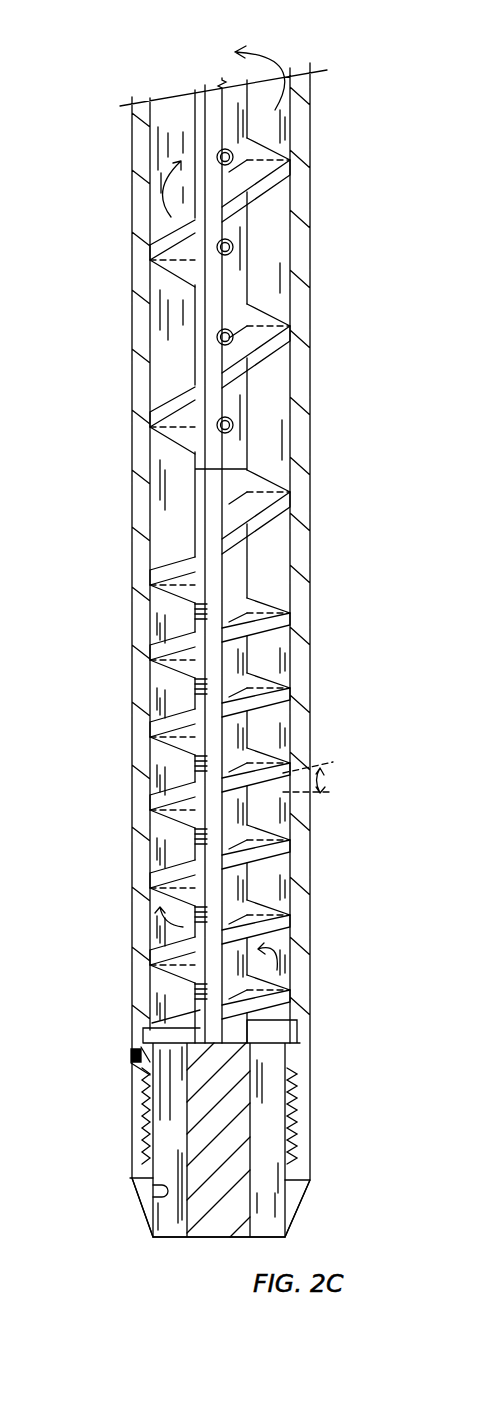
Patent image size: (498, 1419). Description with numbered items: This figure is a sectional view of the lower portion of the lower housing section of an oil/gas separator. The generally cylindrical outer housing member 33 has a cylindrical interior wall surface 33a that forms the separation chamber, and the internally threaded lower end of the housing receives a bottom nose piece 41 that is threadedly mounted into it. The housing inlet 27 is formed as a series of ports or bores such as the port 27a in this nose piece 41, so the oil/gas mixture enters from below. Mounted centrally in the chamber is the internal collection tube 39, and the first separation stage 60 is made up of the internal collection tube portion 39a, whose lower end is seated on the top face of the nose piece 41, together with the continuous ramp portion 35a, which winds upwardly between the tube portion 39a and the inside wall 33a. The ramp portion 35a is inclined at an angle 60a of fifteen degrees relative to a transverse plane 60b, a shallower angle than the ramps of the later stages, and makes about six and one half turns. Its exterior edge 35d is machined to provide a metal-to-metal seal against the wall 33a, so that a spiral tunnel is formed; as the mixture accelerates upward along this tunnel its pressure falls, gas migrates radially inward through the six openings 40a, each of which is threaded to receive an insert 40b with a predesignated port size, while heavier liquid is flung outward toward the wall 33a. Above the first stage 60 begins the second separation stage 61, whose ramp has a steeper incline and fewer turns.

The housing inlet 27 is at (148, 1240).
The inlet port 27a is at (163, 1195).
The outer housing member 33 is at (300, 690).
The cylindrical interior wall surface 33a is at (298, 1097).
The continuous ramp portion 35a is at (170, 713).
The exterior edge 35d is at (282, 615).
The internal collection tube 39 is at (195, 484).
The internal collection tube portion 39a is at (282, 746).
The openings 40a is at (165, 845).
The insert 40b is at (170, 857).
The bottom nose piece 41 is at (205, 1103).
The first separation stage 60 is at (168, 798).
The angle of incline 60a is at (325, 770).
The transverse plane 60b is at (318, 800).
The second separation stage 61 is at (133, 216).